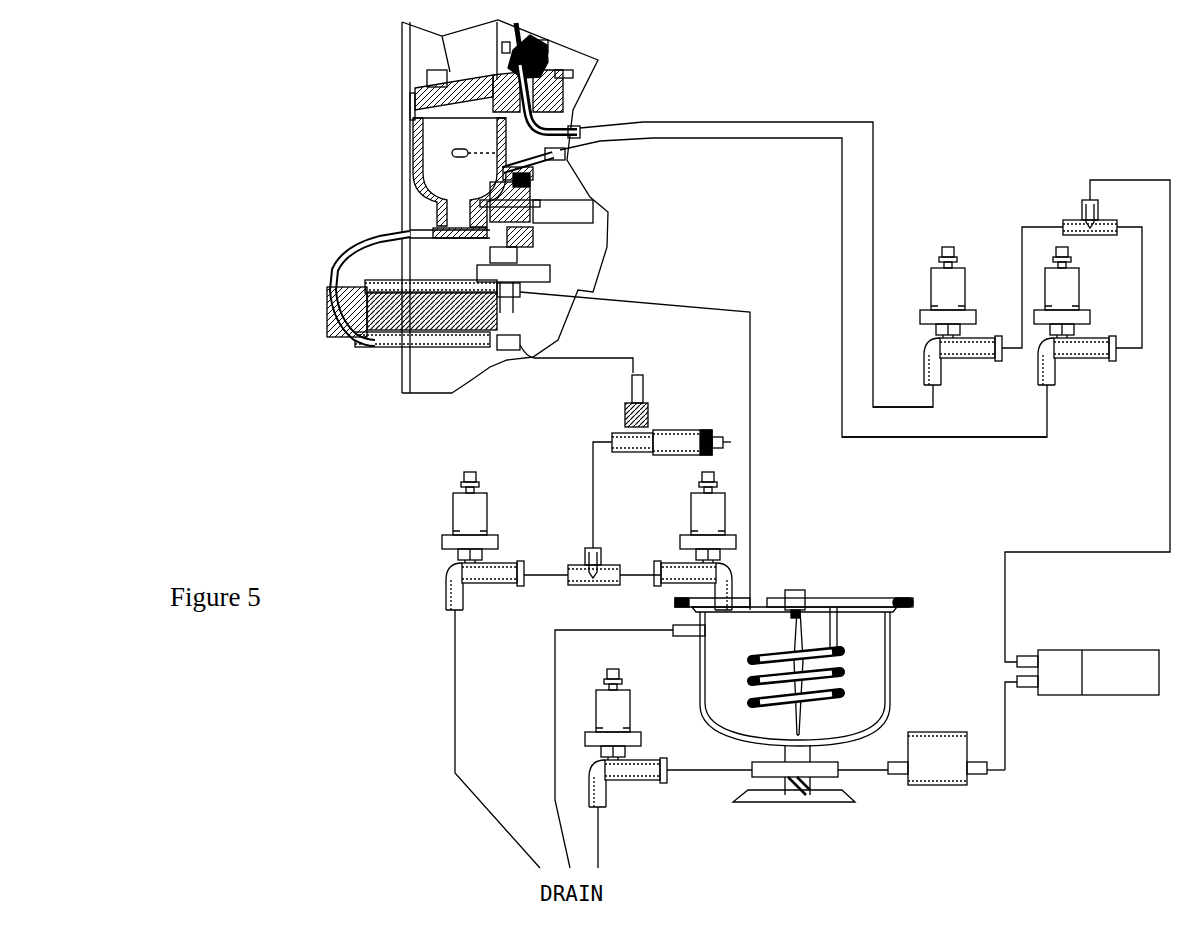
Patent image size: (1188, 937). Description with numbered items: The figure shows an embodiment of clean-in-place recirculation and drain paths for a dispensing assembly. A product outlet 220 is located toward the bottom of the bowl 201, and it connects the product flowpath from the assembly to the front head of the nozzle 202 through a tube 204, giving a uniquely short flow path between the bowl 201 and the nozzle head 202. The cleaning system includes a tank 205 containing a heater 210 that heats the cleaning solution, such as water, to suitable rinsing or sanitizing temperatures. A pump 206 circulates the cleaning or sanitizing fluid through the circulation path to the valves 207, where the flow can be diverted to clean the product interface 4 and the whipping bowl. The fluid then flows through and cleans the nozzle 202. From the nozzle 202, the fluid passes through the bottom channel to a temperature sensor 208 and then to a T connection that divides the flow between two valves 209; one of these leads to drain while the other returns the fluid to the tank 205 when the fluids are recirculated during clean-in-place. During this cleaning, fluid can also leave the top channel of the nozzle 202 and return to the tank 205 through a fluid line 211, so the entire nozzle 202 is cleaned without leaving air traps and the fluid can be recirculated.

The product interface 4 is at (556, 53).
The bowl 201 is at (415, 173).
The nozzle 202 is at (325, 303).
The tube 204 is at (327, 252).
The tank 205 is at (832, 592).
The pump 206 is at (1105, 660).
The valves 207 is at (1002, 287).
The temperature sensor 208 is at (780, 120).
The valves 209 is at (677, 533).
The heater 210 is at (842, 692).
The fluid line 211 is at (637, 303).
The product outlet 220 is at (423, 232).